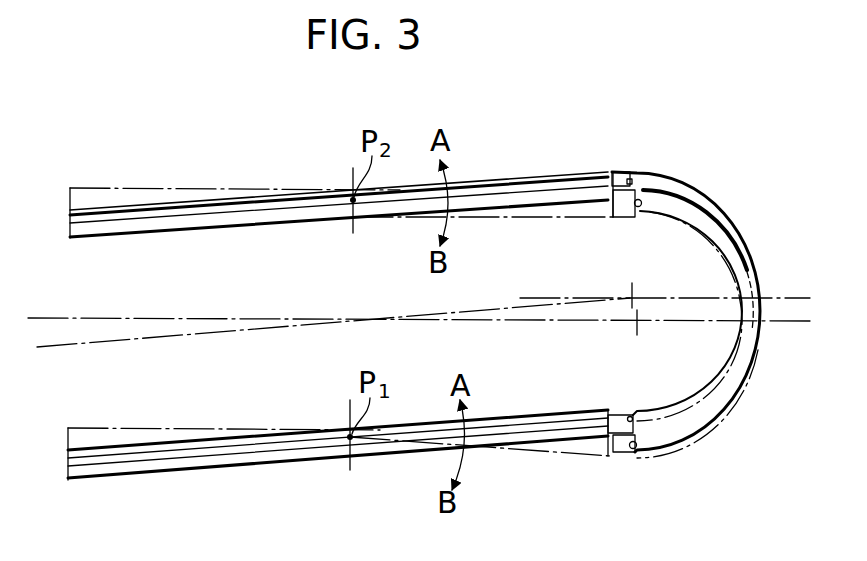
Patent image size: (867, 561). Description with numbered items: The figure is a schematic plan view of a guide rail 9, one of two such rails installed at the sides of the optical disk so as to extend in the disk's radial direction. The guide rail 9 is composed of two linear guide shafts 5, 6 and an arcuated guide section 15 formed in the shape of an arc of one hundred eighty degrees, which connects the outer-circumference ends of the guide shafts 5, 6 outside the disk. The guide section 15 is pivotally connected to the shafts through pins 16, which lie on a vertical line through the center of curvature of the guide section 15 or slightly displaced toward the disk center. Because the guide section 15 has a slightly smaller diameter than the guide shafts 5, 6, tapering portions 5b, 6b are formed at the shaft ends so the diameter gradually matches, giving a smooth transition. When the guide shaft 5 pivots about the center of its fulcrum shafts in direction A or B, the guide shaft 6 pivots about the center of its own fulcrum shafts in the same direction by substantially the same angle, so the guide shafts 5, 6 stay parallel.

The guide shaft 5 is at (160, 456).
The guide shaft 6 is at (233, 208).
The guide rail 9 is at (558, 168).
The tapering portion 5b is at (612, 442).
The tapering portion 6b is at (612, 178).
The guide section 15 is at (722, 373).
The pin 16 is at (640, 178).